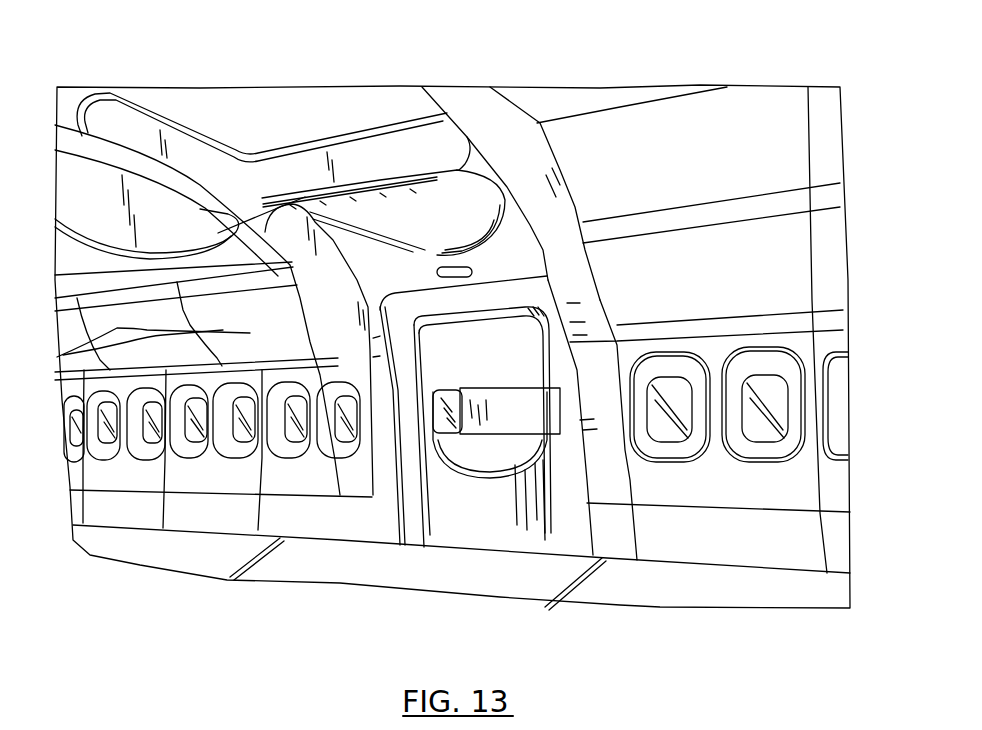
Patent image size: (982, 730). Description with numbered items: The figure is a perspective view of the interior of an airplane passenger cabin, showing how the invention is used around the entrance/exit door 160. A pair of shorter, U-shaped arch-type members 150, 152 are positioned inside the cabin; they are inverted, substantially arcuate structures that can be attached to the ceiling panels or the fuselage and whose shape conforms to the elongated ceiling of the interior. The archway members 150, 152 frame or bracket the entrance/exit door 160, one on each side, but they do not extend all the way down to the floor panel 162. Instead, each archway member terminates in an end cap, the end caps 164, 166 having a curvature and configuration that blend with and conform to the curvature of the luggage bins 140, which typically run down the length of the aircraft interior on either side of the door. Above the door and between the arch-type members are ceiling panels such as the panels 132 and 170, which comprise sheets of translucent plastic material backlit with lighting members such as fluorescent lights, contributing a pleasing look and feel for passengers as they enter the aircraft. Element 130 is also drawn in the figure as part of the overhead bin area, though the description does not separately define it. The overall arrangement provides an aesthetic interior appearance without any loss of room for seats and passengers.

The overhead stowage bin 130 is at (400, 148).
The ceiling panel 132 is at (297, 107).
The luggage bins 140 is at (777, 253).
The arch-type member 150 is at (237, 223).
The arch-type member 152 is at (550, 203).
The entrance/exit door 160 is at (484, 530).
The floor panel 162 is at (630, 597).
The end cap 164 is at (317, 313).
The end cap 166 is at (573, 287).
The ceiling panel 170 is at (442, 232).